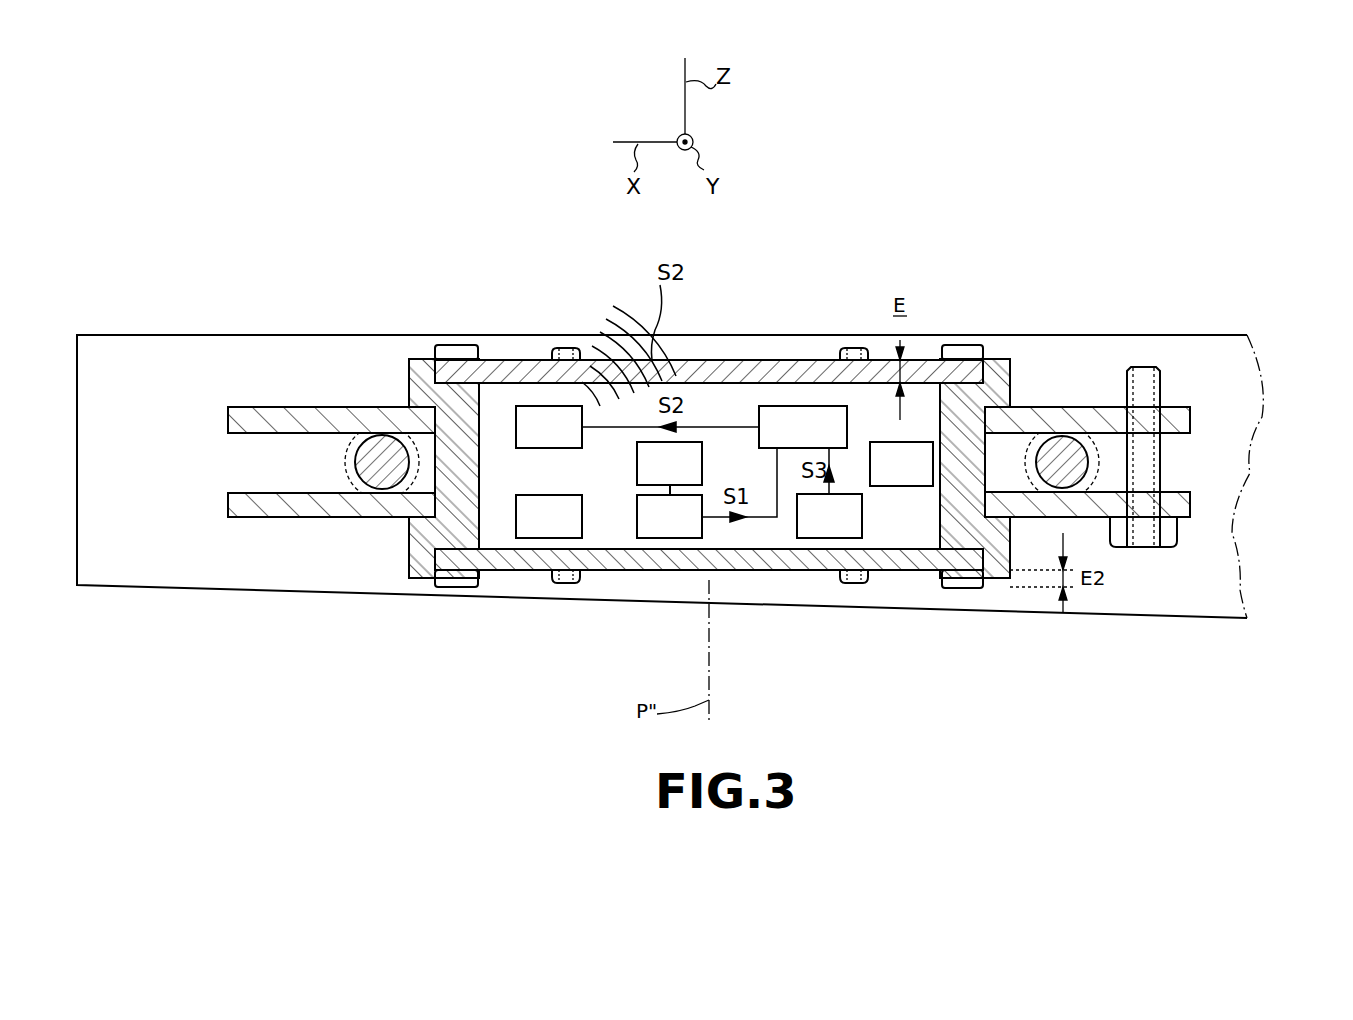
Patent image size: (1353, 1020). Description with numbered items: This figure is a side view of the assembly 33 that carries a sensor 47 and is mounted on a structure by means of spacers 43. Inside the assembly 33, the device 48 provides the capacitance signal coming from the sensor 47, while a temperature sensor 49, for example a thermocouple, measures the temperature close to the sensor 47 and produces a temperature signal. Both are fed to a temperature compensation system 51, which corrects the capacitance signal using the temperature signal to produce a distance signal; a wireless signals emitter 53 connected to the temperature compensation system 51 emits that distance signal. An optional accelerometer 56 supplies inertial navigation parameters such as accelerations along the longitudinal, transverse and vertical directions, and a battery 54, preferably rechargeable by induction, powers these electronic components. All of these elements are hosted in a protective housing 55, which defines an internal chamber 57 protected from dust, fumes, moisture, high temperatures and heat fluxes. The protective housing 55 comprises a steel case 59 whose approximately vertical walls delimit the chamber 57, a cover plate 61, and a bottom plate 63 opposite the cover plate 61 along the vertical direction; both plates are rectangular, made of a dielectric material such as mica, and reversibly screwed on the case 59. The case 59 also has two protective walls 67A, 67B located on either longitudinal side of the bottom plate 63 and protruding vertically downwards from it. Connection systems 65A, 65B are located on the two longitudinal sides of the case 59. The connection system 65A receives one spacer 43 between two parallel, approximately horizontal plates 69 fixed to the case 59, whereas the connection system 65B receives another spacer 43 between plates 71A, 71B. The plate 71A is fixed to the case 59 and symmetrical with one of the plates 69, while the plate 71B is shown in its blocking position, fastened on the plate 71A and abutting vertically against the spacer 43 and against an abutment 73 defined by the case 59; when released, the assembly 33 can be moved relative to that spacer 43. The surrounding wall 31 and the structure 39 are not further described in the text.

The housing wall 31 is at (195, 558).
The assembly 33 is at (385, 280).
The structure 39 is at (1215, 355).
The spacer 43 is at (372, 488).
The sensor 47 is at (669, 463).
The device for providing the capacitance signal 48 is at (669, 516).
The temperature sensor 49 is at (829, 516).
The temperature compensation system 51 is at (803, 427).
The wireless signals emitter 53 is at (549, 427).
The battery 54 is at (549, 516).
The protective housing 55 is at (519, 562).
The accelerometer 56 is at (901, 464).
The internal chamber 57 is at (591, 474).
The case 59 is at (1008, 386).
The cover plate 61 is at (760, 376).
The bottom plate 63 is at (787, 570).
The connection system 65A is at (265, 562).
The connection system 65B is at (1153, 570).
The protective wall 67A is at (413, 573).
The protective wall 67B is at (995, 578).
The parallel plates 69 is at (233, 420).
The plate 71A is at (1190, 420).
The plate 71B is at (1190, 505).
The abutment 73 is at (997, 500).